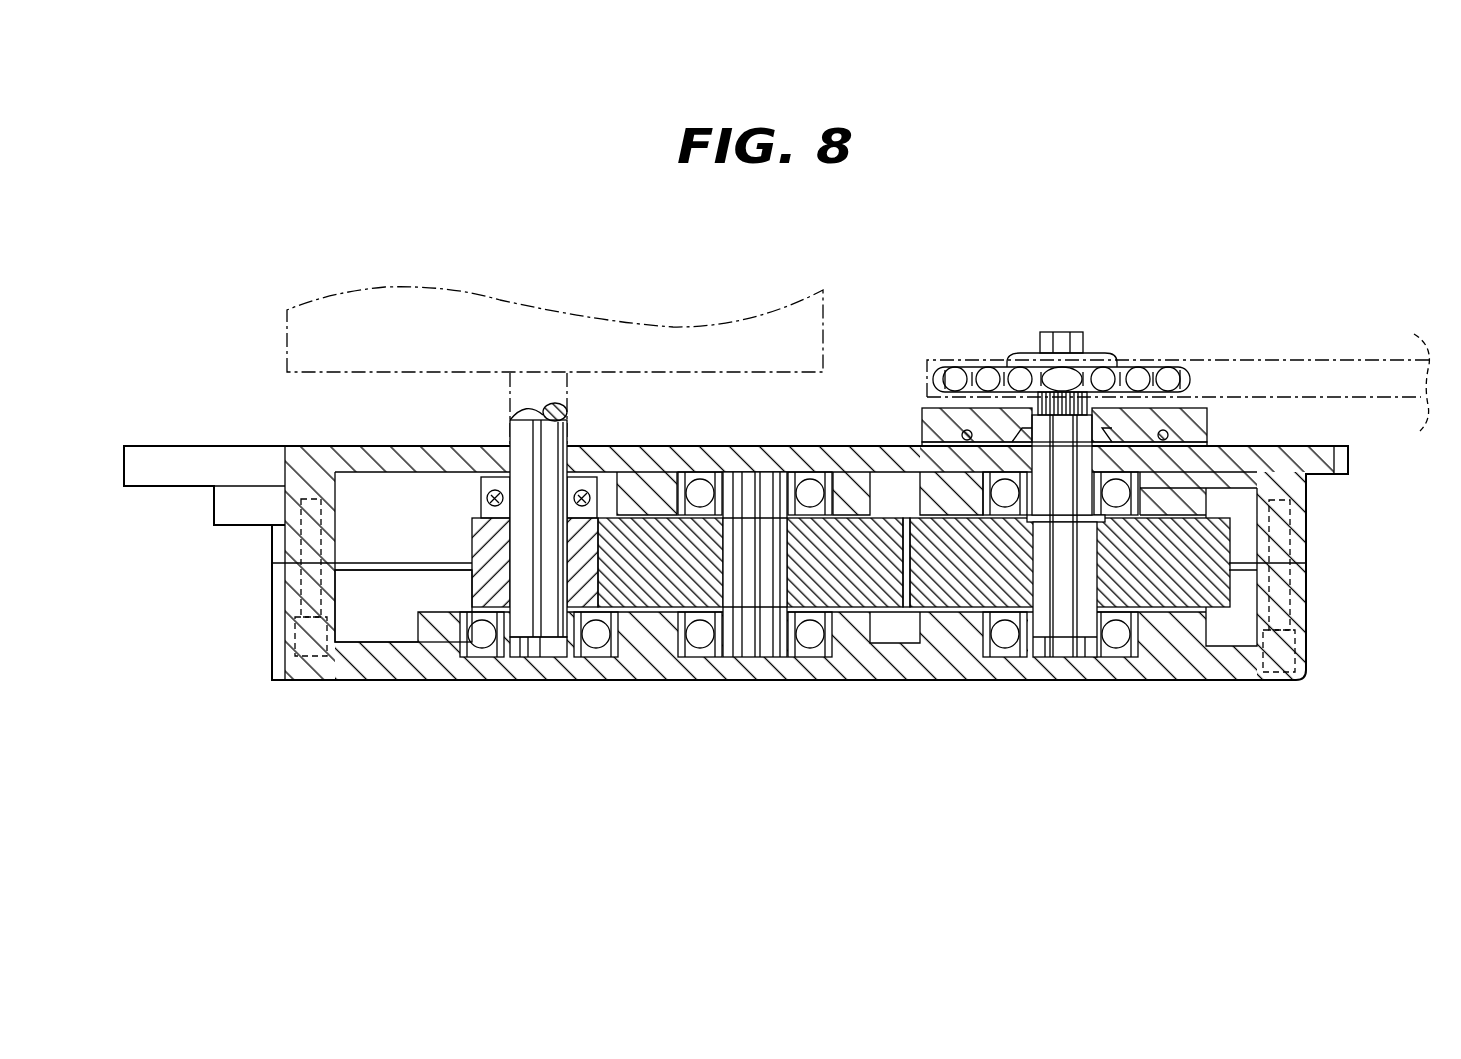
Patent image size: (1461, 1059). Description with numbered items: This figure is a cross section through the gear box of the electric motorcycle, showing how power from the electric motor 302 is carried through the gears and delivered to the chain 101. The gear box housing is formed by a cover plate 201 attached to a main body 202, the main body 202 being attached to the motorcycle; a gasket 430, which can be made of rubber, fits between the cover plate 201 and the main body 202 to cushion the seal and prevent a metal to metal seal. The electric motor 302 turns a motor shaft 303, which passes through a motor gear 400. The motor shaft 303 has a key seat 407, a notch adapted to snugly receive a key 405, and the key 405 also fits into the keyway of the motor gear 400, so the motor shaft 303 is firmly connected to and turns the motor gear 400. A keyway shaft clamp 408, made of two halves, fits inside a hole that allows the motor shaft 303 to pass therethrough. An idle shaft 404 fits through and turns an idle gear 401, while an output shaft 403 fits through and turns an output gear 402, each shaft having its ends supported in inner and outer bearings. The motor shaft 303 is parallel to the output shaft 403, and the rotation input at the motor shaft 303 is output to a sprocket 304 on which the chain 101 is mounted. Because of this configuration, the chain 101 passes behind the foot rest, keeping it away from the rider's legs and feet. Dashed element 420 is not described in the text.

The chain 101 is at (1286, 375).
The cover plate 201 is at (1217, 681).
The main body 202 is at (200, 453).
The electric motor 302 is at (385, 312).
The motor shaft 303 is at (522, 430).
The sprocket 304 is at (988, 382).
The motor gear 400 is at (473, 552).
The idle gear 401 is at (645, 585).
The output gear 402 is at (950, 587).
The output shaft 403 is at (1093, 408).
The idle shaft 404 is at (752, 570).
The key 405 is at (540, 632).
The key seat 407 is at (537, 459).
The keyway shaft clamp 408 is at (590, 487).
The fastening member 420 is at (282, 640).
The gasket 430 is at (362, 572).